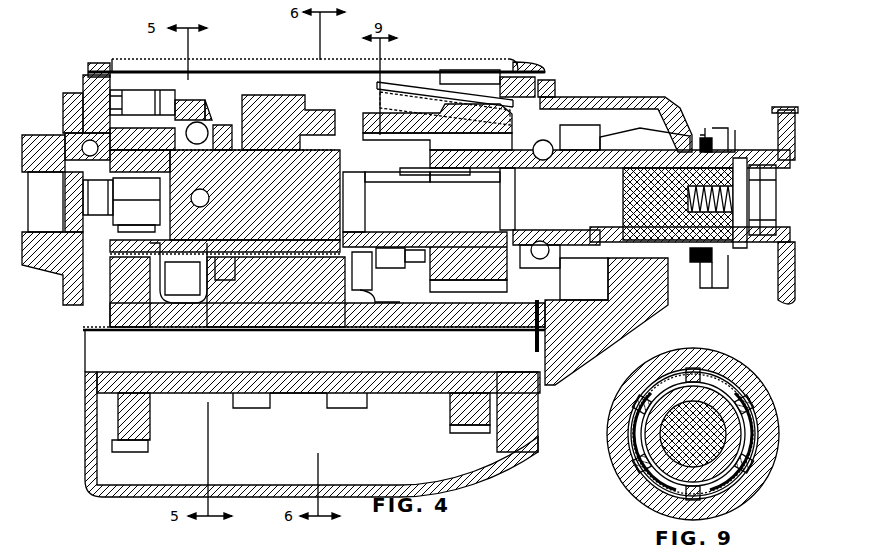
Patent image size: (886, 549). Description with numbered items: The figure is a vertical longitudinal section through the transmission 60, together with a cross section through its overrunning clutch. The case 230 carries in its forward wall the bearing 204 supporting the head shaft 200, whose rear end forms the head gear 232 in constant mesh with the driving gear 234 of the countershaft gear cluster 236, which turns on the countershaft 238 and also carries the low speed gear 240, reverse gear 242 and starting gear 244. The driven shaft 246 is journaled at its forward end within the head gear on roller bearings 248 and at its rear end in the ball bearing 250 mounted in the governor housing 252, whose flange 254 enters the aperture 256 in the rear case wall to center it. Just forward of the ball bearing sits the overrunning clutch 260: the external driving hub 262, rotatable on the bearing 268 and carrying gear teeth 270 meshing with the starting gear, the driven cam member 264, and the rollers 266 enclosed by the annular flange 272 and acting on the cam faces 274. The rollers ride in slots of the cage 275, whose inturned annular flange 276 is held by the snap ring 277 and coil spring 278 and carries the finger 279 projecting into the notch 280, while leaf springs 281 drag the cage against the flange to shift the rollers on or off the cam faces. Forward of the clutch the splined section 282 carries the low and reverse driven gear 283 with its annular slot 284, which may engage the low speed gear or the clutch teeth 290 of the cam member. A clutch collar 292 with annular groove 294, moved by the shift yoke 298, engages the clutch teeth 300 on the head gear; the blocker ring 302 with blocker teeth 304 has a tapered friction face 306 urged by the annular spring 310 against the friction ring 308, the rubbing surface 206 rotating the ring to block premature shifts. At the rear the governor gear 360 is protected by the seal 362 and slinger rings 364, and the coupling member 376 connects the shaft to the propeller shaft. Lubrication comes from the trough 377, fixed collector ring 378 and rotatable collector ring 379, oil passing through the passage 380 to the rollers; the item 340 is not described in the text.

In FIG. 4, the transmission 60 is at (492, 33).
In FIG. 4, the head shaft 200 is at (58, 199).
In FIG. 4, the bearing 204 is at (72, 112).
In FIG. 4, the surface 206 is at (68, 133).
In FIG. 4, the case 230 is at (88, 488).
In FIG. 4, the head gear 232 is at (165, 118).
In FIG. 4, the driving gear 234 is at (150, 441).
In FIG. 4, the countershaft gear cluster 236 is at (298, 421).
In FIG. 4, the countershaft 238 is at (310, 354).
In FIG. 4, the low speed gear 240 is at (235, 410).
In FIG. 4, the reverse gear 242 is at (348, 410).
In FIG. 4, the starting gear 244 is at (456, 433).
In FIG. 4, the driven shaft 246 is at (628, 196).
In FIG. 9, the driven shaft 246 is at (710, 443).
In FIG. 4, the roller bearings 248 is at (98, 197).
In FIG. 4, the ball bearing 250 is at (556, 151).
In FIG. 4, the governor housing 252 is at (612, 103).
In FIG. 4, the flange 254 is at (556, 88).
In FIG. 4, the aperture 256 is at (545, 76).
In FIG. 4, the overrunning clutch 260 is at (364, 110).
In FIG. 9, the overrunning clutch 260 is at (778, 470).
In FIG. 4, the driving hub 262 is at (518, 192).
In FIG. 4, the driven cam member 264 is at (380, 238).
In FIG. 9, the driven cam member 264 is at (616, 458).
In FIG. 4, the rollers 266 is at (372, 203).
In FIG. 9, the rollers 266 is at (627, 405).
In FIG. 4, the bearing 268 is at (520, 232).
In FIG. 4, the gear teeth 270 is at (465, 115).
In FIG. 4, the annular flange 272 is at (430, 90).
In FIG. 9, the annular flange 272 is at (612, 430).
In FIG. 4, the cam faces 274 is at (320, 292).
In FIG. 9, the cam faces 274 is at (712, 372).
In FIG. 4, the cage 275 is at (372, 300).
In FIG. 9, the cage 275 is at (764, 403).
In FIG. 4, the inturned annular flange 276 is at (468, 252).
In FIG. 4, the snap ring 277 is at (426, 237).
In FIG. 4, the coil spring 278 is at (397, 190).
In FIG. 4, the finger 279 is at (428, 198).
In FIG. 9, the finger 279 is at (740, 376).
In FIG. 4, the notch 280 is at (465, 190).
In FIG. 9, the notch 280 is at (754, 388).
In FIG. 9, the leaf springs 281 is at (662, 374).
In FIG. 4, the splined section 282 is at (226, 143).
In FIG. 4, the low and reverse driven gear 283 is at (260, 98).
In FIG. 4, the annular slot 284 is at (312, 128).
In FIG. 4, the clutch teeth 290 is at (361, 202).
In FIG. 4, the clutch collar 292 is at (210, 133).
In FIG. 4, the annular groove 294 is at (210, 116).
In FIG. 4, the shift yoke 298 is at (176, 95).
In FIG. 9, the shift yoke 298 is at (618, 541).
In FIG. 4, the clutch teeth 300 is at (160, 283).
In FIG. 4, the blocker ring 302 is at (213, 282).
In FIG. 4, the blocker teeth 304 is at (182, 285).
In FIG. 4, the tapered friction face 306 is at (136, 201).
In FIG. 4, the friction ring 308 is at (136, 215).
In FIG. 4, the annular spring 310 is at (210, 166).
In FIG. 4, the drain 340 is at (538, 540).
In FIG. 4, the governor gear 360 is at (622, 136).
In FIG. 4, the seal 362 is at (708, 130).
In FIG. 4, the slinger rings 364 is at (730, 137).
In FIG. 4, the coupling member 376 is at (778, 277).
In FIG. 4, the trough 377 is at (428, 96).
In FIG. 4, the fixed collector ring 378 is at (562, 133).
In FIG. 4, the rotatable collector ring 379 is at (602, 321).
In FIG. 4, the passage 380 is at (497, 199).